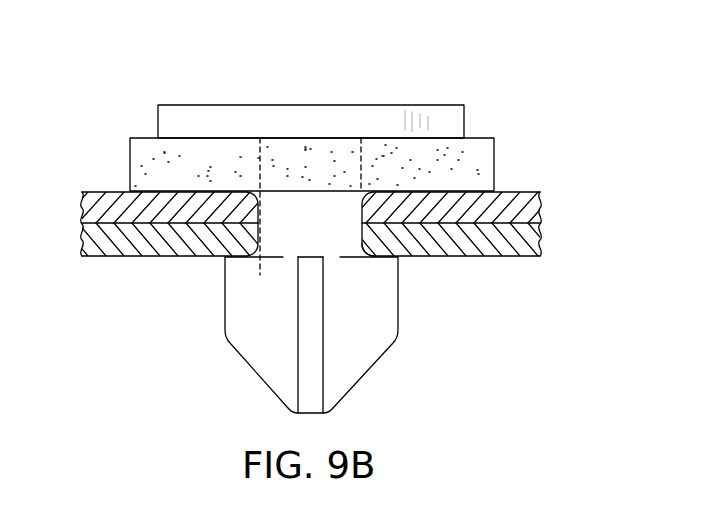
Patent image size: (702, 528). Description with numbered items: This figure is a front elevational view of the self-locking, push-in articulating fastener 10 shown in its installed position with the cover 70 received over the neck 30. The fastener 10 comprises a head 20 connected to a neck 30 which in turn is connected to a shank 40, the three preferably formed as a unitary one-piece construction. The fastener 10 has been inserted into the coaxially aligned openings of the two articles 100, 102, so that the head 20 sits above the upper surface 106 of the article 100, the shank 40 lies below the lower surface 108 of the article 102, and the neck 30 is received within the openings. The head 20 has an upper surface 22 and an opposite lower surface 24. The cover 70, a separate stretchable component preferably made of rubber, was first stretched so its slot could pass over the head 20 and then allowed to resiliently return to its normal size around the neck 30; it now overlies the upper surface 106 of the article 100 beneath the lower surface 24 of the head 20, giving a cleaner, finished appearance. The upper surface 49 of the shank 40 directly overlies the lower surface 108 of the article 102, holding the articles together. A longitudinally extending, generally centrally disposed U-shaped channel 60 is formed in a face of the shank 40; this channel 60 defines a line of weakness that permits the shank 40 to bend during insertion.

The fastener 10 is at (386, 381).
The head 20 is at (448, 120).
The upper surface 22 is at (179, 105).
The lower surface 24 is at (192, 139).
The neck 30 is at (331, 214).
The shank 40 is at (242, 333).
The upper surface 49 is at (380, 258).
The U-shaped channel 60 is at (297, 352).
The cover 70 is at (481, 155).
The article 100 is at (532, 208).
The article 102 is at (532, 247).
The upper surface 106 is at (97, 192).
The lower surface 108 is at (103, 257).